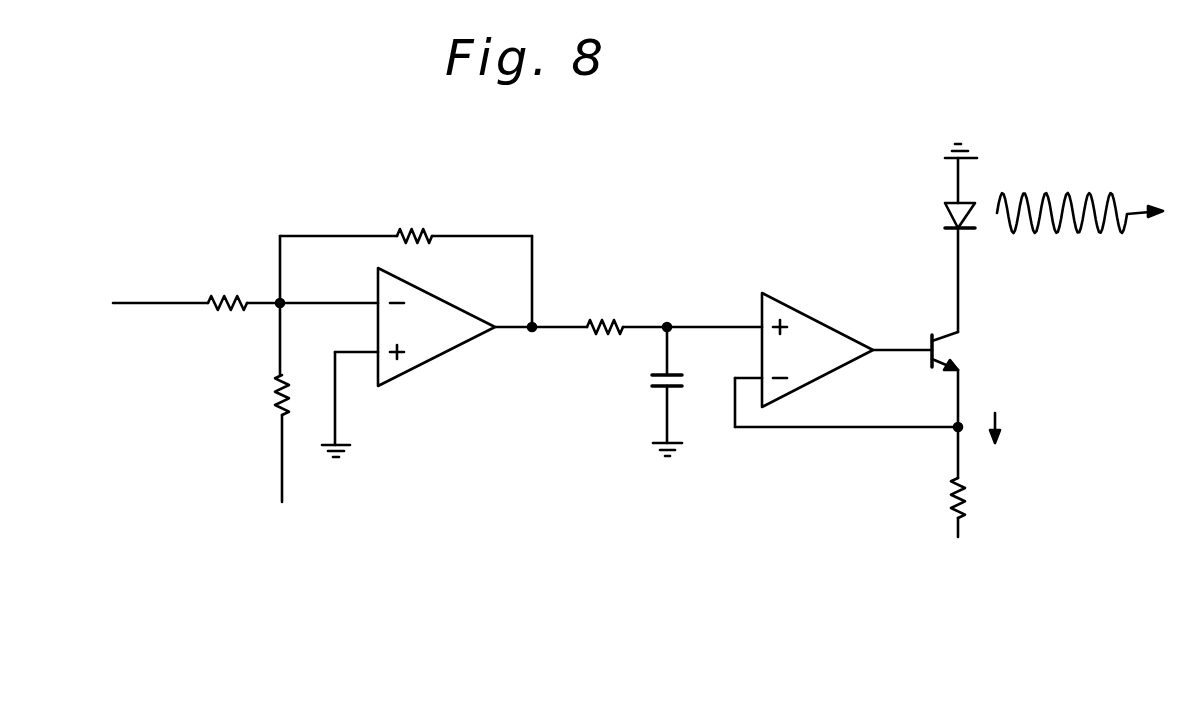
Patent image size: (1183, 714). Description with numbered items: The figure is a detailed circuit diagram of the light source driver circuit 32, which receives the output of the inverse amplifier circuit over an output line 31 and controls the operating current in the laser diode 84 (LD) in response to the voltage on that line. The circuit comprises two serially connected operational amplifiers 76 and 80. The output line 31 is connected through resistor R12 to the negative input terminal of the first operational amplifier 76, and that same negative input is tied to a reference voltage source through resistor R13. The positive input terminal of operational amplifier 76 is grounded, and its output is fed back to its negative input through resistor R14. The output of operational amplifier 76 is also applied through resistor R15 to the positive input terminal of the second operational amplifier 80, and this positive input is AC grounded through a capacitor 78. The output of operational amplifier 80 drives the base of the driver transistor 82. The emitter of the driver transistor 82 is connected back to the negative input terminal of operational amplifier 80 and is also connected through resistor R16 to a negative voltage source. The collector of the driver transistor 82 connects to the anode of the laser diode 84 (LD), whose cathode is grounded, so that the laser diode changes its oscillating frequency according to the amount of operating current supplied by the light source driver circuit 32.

The output line 31 is at (135, 303).
The resistor R12 is at (226, 300).
The resistor R13 is at (269, 397).
The resistor R14 is at (413, 230).
The resistor R15 is at (601, 318).
The resistor R16 is at (968, 497).
The operational amplifier 76 is at (440, 357).
The capacitor 78 is at (646, 380).
The operational amplifier 80 is at (831, 320).
The driver transistor 82 is at (962, 352).
The laser diode 84 is at (912, 190).
The laser diode LD is at (939, 245).
The light source driver circuit 32 is at (926, 684).